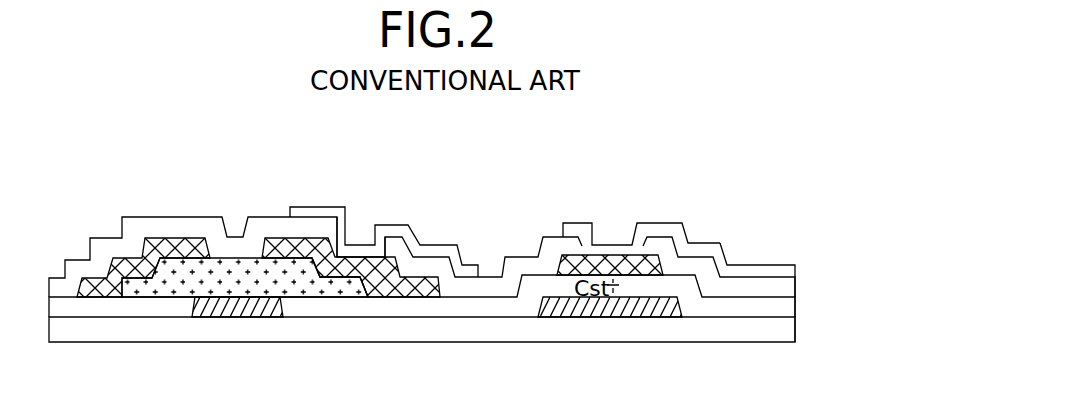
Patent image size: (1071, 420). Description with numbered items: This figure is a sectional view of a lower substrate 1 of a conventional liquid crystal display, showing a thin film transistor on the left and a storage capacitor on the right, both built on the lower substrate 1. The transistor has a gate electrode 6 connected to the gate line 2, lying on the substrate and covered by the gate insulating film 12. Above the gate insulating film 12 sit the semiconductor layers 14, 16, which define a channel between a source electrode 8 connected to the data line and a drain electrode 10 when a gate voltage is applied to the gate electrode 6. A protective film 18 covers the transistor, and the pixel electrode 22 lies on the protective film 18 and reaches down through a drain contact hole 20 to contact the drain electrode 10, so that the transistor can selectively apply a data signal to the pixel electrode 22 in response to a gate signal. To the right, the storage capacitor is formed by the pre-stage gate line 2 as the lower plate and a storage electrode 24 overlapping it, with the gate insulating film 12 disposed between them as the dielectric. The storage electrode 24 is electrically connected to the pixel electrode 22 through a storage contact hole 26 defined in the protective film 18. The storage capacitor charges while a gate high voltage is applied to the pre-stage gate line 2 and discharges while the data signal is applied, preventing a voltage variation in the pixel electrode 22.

The lower substrate 1 is at (793, 332).
The gate line 2 is at (572, 297).
The gate electrode 6 is at (230, 317).
The source electrode 8 is at (113, 262).
The drain electrode 10 is at (287, 245).
The gate insulating film 12 is at (793, 302).
The semiconductor layer 14 is at (150, 292).
The semiconductor layer 16 is at (327, 275).
The protective film 18 is at (793, 276).
The drain contact hole 20 is at (358, 213).
The pixel electrode 22 is at (423, 248).
The storage electrode 24 is at (647, 275).
The storage contact hole 26 is at (607, 222).